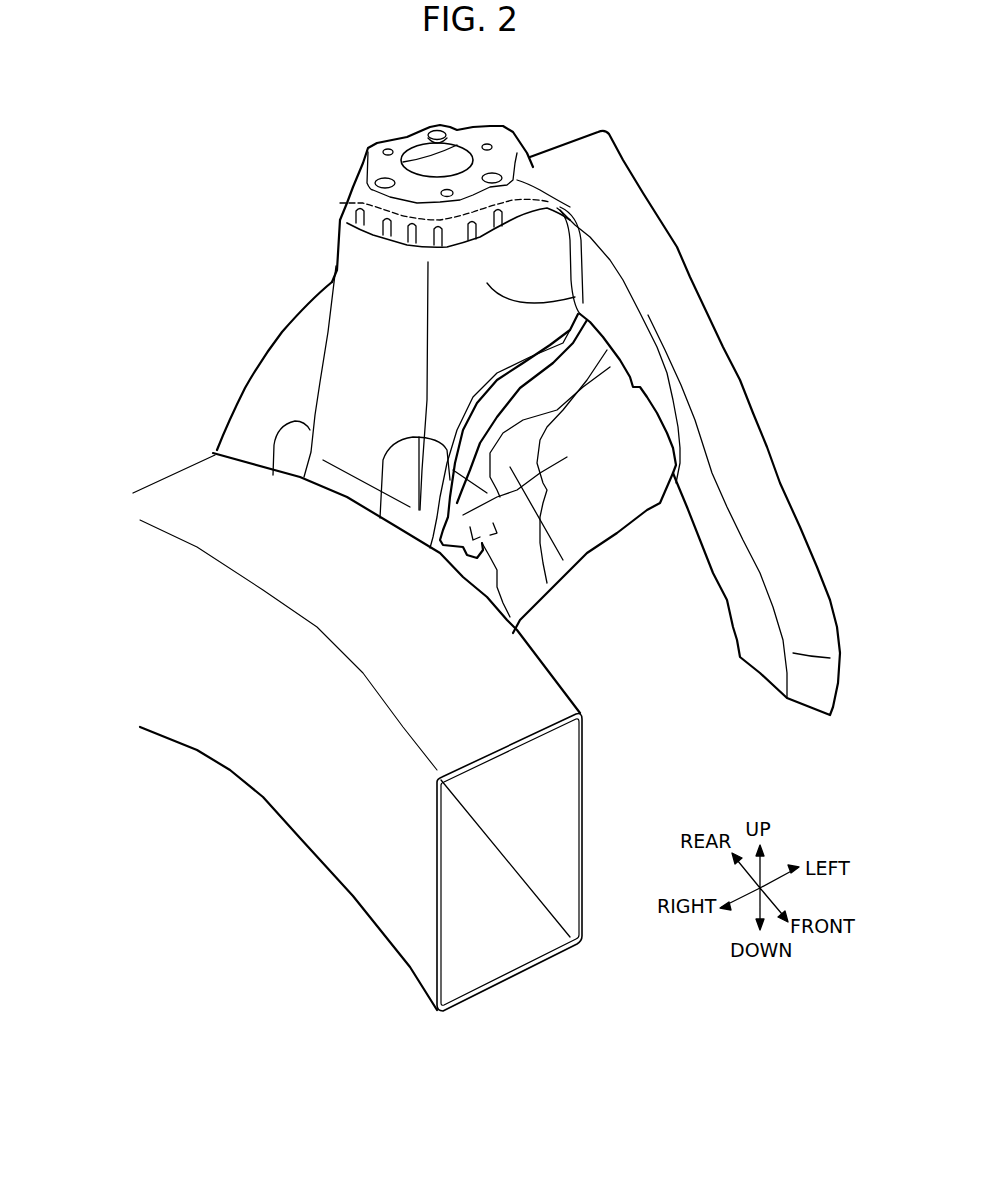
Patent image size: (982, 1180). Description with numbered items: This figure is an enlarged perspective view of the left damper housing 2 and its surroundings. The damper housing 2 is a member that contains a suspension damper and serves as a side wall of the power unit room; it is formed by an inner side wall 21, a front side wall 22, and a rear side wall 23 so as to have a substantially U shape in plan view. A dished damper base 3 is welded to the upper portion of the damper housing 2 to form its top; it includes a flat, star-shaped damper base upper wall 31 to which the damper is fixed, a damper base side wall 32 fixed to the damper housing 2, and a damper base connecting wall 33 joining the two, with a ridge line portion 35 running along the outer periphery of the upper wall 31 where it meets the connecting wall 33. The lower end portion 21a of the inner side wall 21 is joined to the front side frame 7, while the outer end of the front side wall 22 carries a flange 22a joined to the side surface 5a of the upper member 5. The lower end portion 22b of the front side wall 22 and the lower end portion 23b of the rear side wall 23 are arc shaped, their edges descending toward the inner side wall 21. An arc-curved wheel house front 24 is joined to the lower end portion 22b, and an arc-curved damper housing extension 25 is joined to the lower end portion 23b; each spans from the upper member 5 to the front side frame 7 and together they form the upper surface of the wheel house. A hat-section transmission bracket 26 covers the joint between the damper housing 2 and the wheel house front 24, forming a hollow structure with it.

The damper housing 2 is at (464, 347).
The damper base 3 is at (432, 154).
The upper member 5 is at (685, 423).
The side surface 5a is at (735, 594).
The front side frame 7 is at (367, 893).
The inner side wall 21 is at (303, 380).
The lower end portion 21a is at (347, 485).
The front side wall 22 is at (555, 420).
The flange 22a is at (590, 263).
The lower end portion 22b is at (383, 512).
The rear side wall 23 is at (278, 361).
The lower end portion 23b is at (274, 470).
The wheel house front 24 is at (612, 508).
The damper housing extension 25 is at (250, 412).
The transmission bracket 26 is at (547, 583).
The damper base upper wall 31 is at (380, 167).
The damper base side wall 32 is at (372, 230).
The damper base connecting wall 33 is at (533, 177).
The ridge line portion 35 is at (415, 140).